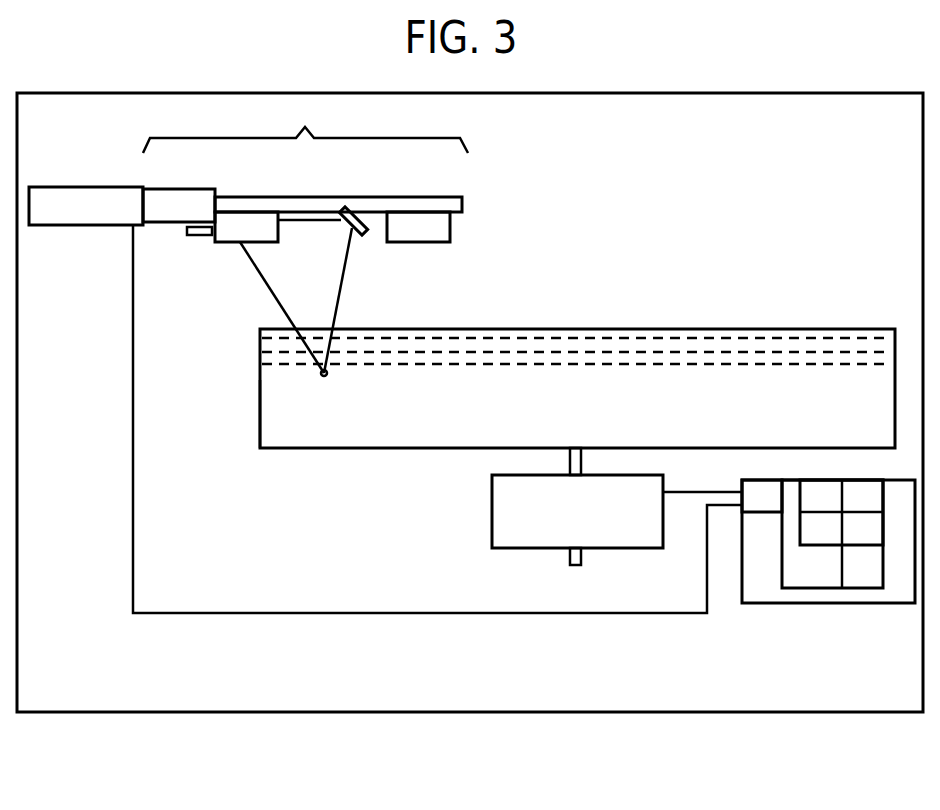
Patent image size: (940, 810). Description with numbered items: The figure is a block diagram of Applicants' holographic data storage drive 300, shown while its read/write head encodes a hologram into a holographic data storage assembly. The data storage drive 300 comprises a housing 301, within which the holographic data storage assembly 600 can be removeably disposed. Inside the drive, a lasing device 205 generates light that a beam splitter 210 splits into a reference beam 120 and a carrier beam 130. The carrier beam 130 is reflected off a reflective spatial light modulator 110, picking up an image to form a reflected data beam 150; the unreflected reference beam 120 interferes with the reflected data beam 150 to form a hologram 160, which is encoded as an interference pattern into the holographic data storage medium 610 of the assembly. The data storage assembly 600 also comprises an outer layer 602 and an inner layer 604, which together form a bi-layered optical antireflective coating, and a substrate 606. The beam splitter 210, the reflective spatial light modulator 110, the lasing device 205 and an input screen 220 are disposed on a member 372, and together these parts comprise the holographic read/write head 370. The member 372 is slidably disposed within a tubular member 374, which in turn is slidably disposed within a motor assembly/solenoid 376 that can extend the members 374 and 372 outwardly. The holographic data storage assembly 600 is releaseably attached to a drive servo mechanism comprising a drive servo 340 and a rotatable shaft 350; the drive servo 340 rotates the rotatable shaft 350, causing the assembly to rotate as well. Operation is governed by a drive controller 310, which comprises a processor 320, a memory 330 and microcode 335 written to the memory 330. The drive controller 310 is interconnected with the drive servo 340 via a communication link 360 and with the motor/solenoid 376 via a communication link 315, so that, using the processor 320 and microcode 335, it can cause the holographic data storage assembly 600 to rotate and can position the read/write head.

The data storage drive 300 is at (428, 742).
The housing 301 is at (628, 712).
The drive controller 310 is at (833, 622).
The communication link 315 is at (535, 613).
The processor 320 is at (746, 508).
The memory 330 is at (766, 580).
The microcode 335 is at (826, 508).
The drive servo 340 is at (560, 525).
The rotatable shaft 350 is at (568, 462).
The communication link 360 is at (688, 489).
The holographic read/write head 370 is at (305, 127).
The member 372 is at (455, 206).
The tubular member 374 is at (162, 218).
The motor assembly/solenoid 376 is at (69, 218).
The reflective spatial light modulator 110 is at (344, 210).
The reference beam 120 is at (262, 277).
The carrier beam 130 is at (338, 221).
The reflected data beam 150 is at (347, 272).
The hologram 160 is at (327, 371).
The lasing device 205 is at (207, 236).
The beam splitter 210 is at (229, 236).
The input screen 220 is at (401, 236).
The holographic data storage assembly 600 is at (592, 312).
The outer layer 602 is at (260, 331).
The inner layer 604 is at (260, 345).
The substrate 606 is at (260, 360).
The holographic data storage medium 610 is at (270, 428).